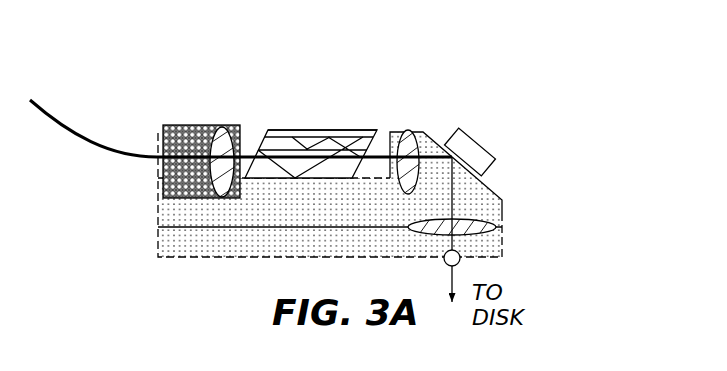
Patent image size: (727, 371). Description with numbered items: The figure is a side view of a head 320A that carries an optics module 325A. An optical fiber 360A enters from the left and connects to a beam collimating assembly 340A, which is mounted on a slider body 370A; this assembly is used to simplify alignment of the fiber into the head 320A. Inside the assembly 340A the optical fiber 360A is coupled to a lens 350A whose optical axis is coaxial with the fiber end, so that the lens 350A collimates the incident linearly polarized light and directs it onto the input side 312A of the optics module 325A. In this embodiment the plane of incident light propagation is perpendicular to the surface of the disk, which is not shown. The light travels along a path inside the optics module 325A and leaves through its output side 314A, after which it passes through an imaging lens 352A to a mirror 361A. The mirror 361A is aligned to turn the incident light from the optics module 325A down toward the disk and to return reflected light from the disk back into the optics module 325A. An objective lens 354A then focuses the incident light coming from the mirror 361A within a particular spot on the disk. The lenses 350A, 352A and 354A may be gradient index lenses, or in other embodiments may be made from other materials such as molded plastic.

The input side 312A is at (260, 133).
The output side 314A is at (383, 134).
The head 320A is at (468, 74).
The optics module 325A is at (331, 126).
The beam collimating assembly 340A is at (167, 122).
The lens 350A is at (220, 126).
The imaging lens 352A is at (414, 127).
The objective lens 354A is at (504, 227).
The optical fiber 360A is at (77, 139).
The mirror 361A is at (470, 140).
The slider body 370A is at (146, 241).